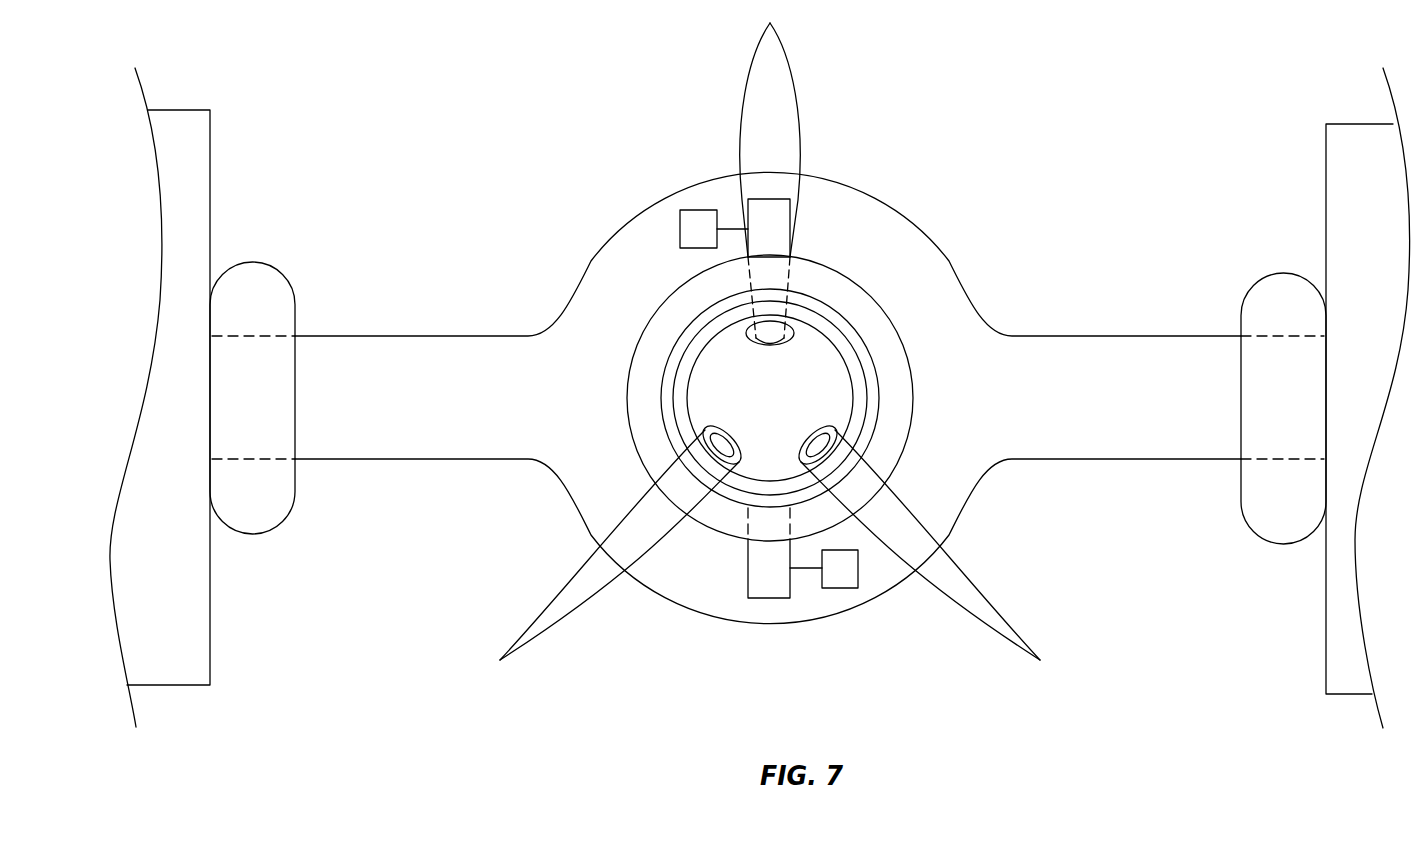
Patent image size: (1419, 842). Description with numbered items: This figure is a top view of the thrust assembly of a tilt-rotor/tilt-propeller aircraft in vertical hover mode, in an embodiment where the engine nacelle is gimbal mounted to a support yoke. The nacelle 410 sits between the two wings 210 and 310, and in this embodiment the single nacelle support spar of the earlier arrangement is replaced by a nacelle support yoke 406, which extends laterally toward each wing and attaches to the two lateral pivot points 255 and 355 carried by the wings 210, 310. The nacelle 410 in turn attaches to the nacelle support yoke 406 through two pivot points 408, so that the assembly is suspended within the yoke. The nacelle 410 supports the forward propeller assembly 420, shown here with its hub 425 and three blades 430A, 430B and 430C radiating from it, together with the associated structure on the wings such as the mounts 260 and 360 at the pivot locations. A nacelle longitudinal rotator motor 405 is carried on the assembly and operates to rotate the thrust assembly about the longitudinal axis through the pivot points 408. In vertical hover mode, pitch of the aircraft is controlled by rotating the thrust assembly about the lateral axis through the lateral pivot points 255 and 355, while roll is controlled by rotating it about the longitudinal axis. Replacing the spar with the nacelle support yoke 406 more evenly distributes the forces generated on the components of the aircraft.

The wing 210 is at (1350, 124).
The lateral pivot point 255 is at (1262, 415).
The first duct housing 260 is at (1283, 273).
The wing 310 is at (185, 110).
The lateral pivot point 355 is at (279, 404).
The second duct housing 360 is at (255, 262).
The nacelle longitudinal rotator motor 405 is at (679, 229).
The nacelle support yoke 406 is at (1040, 336).
The pivot point 408 is at (794, 278).
The nacelle 410 is at (658, 383).
The forward propeller assembly 420 is at (866, 394).
The hub 425 is at (694, 370).
The first blade 430A is at (577, 630).
The second blade 430B is at (963, 630).
The third blade 430C is at (737, 116).